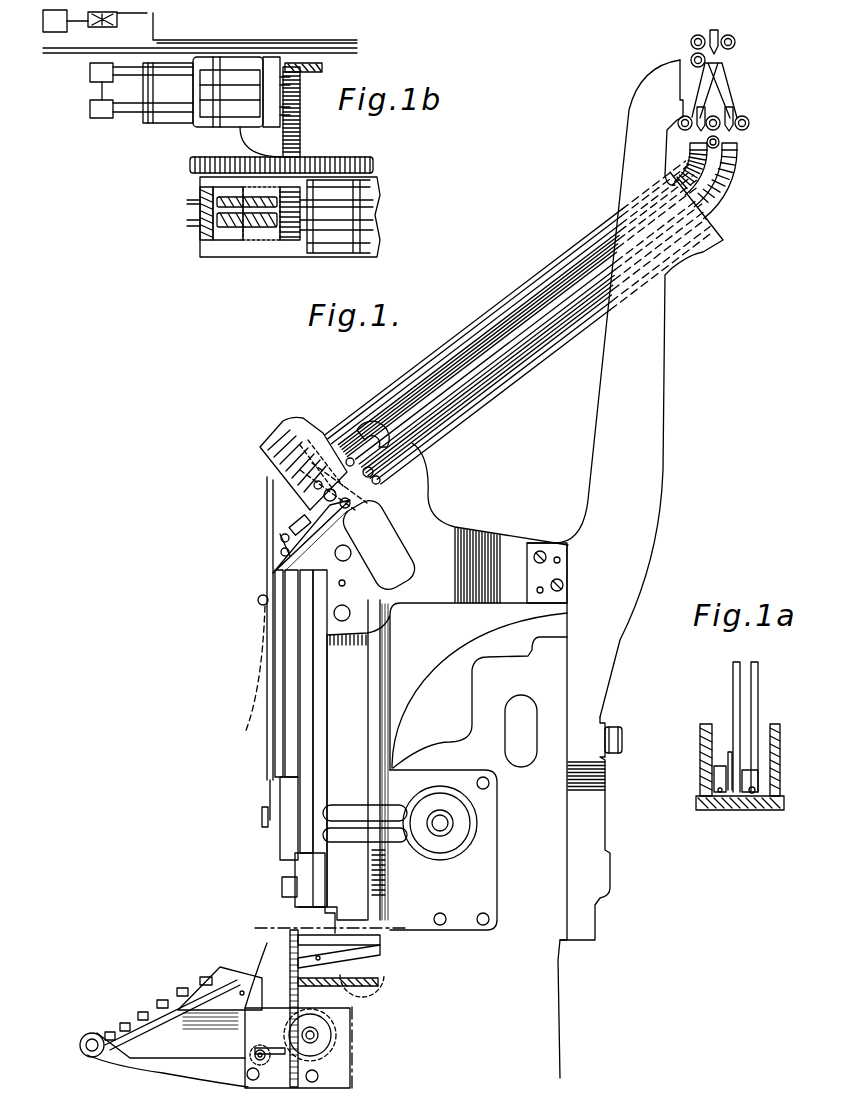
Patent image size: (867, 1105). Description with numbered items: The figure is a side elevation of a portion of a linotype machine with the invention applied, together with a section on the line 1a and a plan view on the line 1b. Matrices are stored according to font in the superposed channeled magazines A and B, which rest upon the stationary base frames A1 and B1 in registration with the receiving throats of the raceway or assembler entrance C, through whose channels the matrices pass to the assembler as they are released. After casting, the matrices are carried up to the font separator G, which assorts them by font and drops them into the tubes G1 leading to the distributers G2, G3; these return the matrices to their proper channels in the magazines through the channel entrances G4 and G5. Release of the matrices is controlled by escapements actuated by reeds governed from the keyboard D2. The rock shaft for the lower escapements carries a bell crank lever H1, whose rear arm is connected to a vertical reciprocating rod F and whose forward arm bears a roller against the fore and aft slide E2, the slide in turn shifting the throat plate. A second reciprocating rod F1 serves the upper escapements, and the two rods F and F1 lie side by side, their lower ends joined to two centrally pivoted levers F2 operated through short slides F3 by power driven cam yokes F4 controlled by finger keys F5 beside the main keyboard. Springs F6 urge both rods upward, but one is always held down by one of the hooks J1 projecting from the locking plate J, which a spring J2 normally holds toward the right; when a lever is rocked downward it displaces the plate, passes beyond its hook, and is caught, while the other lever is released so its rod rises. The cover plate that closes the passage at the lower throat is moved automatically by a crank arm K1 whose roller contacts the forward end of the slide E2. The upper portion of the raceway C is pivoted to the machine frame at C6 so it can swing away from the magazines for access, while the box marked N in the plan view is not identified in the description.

In FIG. 1, the upper magazine A is at (486, 319).
In FIG. 1, the stationary base frame A1 is at (530, 307).
In FIG. 1, the lower magazine B is at (540, 335).
In FIG. 1, the stationary base frame B1 is at (533, 377).
In FIG. 1, the raceway or assembler entrance C is at (268, 562).
In FIG. 1, the pivot of the raceway C6 is at (290, 460).
In FIG. 1B, the keyboard D2 is at (78, 38).
In FIG. 1, the keyboard D2 is at (155, 1017).
In FIG. 1, the fore and aft slide E2 is at (297, 527).
In FIG. 1A, the vertical reciprocating rod F is at (759, 680).
In FIG. 1, the vertical reciprocating rod F is at (390, 648).
In FIG. 1A, the second reciprocating rod F1 is at (734, 668).
In FIG. 1, the second reciprocating rod F1 is at (367, 438).
In FIG. 1B, the centrally pivoted levers F2 is at (360, 224).
In FIG. 1A, the centrally pivoted levers F2 is at (713, 750).
In FIG. 1, the centrally pivoted levers F2 is at (296, 960).
In FIG. 1, the short slides F3 is at (292, 978).
In FIG. 1B, the power driven cam yokes F4 is at (212, 228).
In FIG. 1, the power driven cam yokes F4 is at (250, 1040).
In FIG. 1B, the finger keys F5 is at (90, 78).
In FIG. 1, the finger keys F5 is at (213, 1002).
In FIG. 1, the springs F6 is at (382, 879).
In FIG. 1, the font separator G is at (735, 42).
In FIG. 1, the tubes G1 is at (707, 97).
In FIG. 1, the distributer G2 is at (683, 117).
In FIG. 1, the distributer G3 is at (730, 110).
In FIG. 1, the channel entrance G4 is at (690, 153).
In FIG. 1, the channel entrance G5 is at (738, 152).
In FIG. 1, the bell crank lever H1 is at (374, 479).
In FIG. 1A, the locking plate J is at (702, 812).
In FIG. 1, the locking plate J is at (388, 990).
In FIG. 1A, the hooks J1 is at (740, 778).
In FIG. 1A, the spring J2 is at (760, 812).
In FIG. 1, the crank arm K1 is at (280, 543).
In FIG. 1B, the motor N is at (95, 21).
In FIG. 1, the section line 1a is at (400, 963).
In FIG. 1, the section line 1b is at (330, 926).